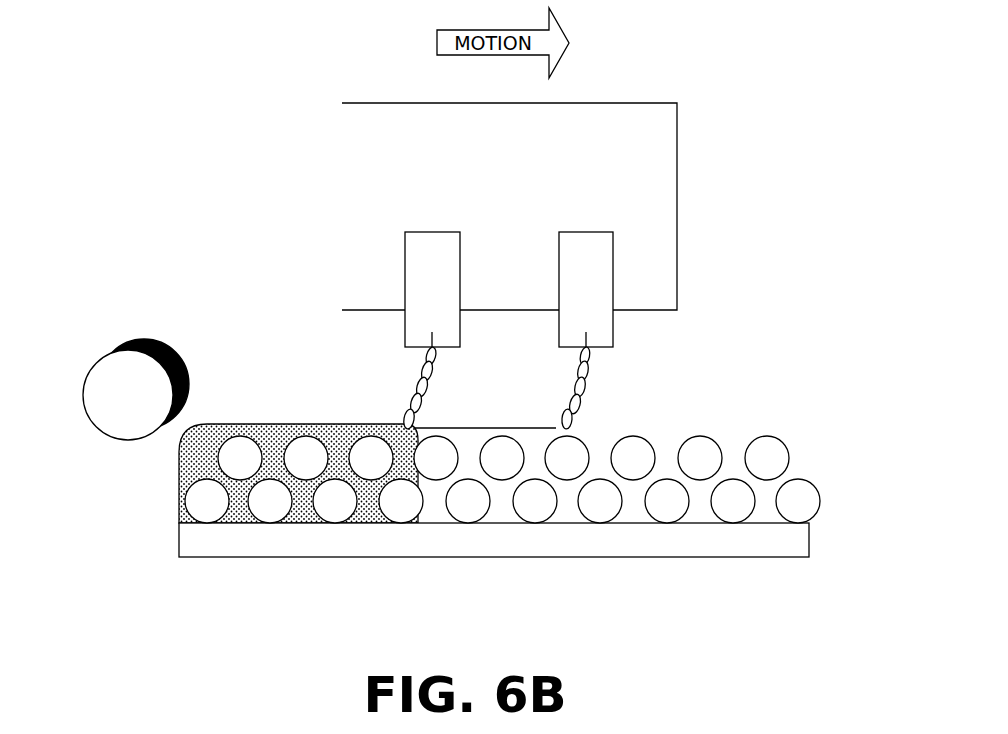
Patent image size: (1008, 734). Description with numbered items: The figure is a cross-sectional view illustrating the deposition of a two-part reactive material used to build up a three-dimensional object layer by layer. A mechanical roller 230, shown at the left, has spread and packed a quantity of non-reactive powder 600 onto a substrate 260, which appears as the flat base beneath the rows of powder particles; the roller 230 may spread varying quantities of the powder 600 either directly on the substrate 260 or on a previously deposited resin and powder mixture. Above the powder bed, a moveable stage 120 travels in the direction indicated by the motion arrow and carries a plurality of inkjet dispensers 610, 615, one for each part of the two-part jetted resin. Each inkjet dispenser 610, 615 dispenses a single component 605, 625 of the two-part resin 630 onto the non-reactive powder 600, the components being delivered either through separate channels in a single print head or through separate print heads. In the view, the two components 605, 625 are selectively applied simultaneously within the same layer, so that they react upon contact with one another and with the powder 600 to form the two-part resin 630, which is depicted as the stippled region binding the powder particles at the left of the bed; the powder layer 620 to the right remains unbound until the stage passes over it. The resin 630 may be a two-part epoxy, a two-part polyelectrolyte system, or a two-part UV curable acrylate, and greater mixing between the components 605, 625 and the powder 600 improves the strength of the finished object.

The moveable stage 120 is at (509, 206).
The inkjet dispenser 615 is at (430, 282).
The inkjet dispenser 610 is at (585, 290).
The component of two-part resin 625 is at (415, 396).
The component of two-part resin 605 is at (575, 402).
The two-part resin 630 is at (273, 423).
The non-reactive powder 600 is at (521, 465).
The bead layer 620 is at (499, 505).
The substrate 260 is at (672, 558).
The mechanical roller 230 is at (130, 397).